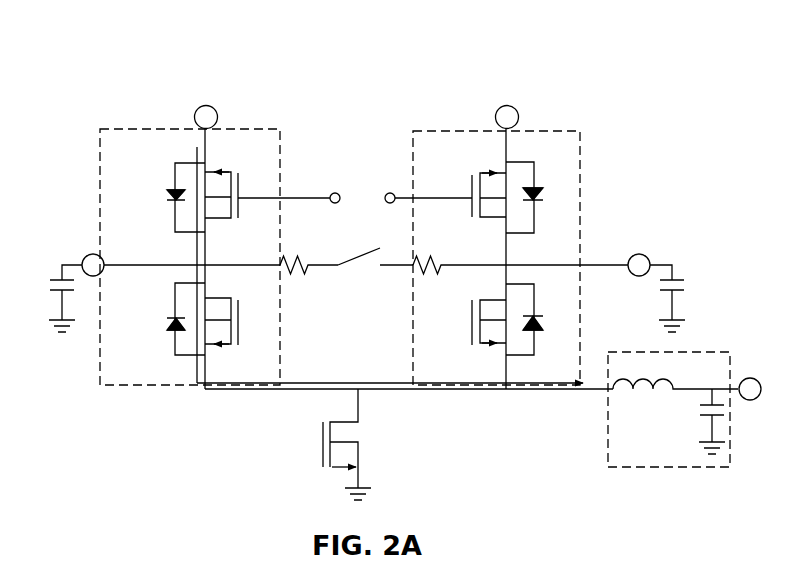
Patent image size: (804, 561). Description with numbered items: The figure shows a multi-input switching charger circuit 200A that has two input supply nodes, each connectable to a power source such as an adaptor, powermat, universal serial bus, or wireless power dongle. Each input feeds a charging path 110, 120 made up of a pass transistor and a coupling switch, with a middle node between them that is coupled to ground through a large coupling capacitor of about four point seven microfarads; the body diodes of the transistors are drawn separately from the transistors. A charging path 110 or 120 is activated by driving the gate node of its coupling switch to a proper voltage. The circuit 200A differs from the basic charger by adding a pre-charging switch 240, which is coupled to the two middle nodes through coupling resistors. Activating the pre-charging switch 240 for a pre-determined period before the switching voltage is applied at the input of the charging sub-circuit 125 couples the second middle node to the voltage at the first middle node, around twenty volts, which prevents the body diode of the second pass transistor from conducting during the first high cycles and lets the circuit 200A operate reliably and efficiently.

The multi-input switching charger circuit 200A is at (632, 78).
The charging path 110 is at (102, 158).
The charging path 120 is at (583, 157).
The charging sub-circuit 125 is at (673, 409).
The pre-charging switch 240 is at (355, 280).